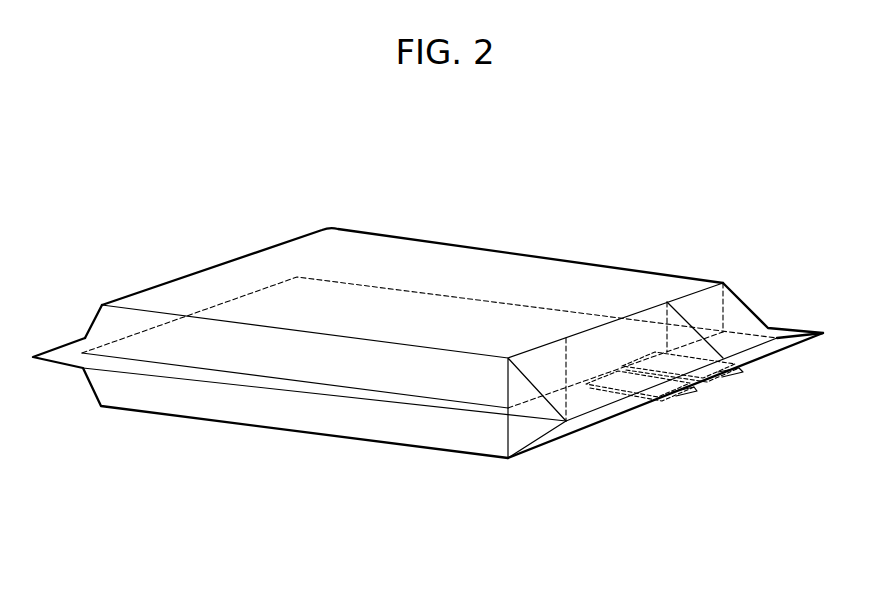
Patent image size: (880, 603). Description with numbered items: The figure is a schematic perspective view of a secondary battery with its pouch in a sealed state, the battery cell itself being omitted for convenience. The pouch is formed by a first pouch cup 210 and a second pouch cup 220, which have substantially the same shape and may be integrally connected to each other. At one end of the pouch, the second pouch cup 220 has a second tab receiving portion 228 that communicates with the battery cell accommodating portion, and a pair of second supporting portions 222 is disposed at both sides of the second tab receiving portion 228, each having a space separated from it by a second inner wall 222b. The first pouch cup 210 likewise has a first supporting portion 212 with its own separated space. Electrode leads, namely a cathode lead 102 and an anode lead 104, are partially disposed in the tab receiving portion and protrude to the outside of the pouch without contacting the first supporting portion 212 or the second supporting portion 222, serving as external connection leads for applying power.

The second pouch cup 220 is at (431, 233).
The first pouch cup 210 is at (383, 452).
The first supporting portion 212 is at (550, 435).
The second supporting portion 222 is at (722, 343).
The second inner wall 222b is at (684, 337).
The second tab receiving portion 228 is at (628, 352).
The cathode lead 102 is at (678, 398).
The anode lead 104 is at (737, 375).